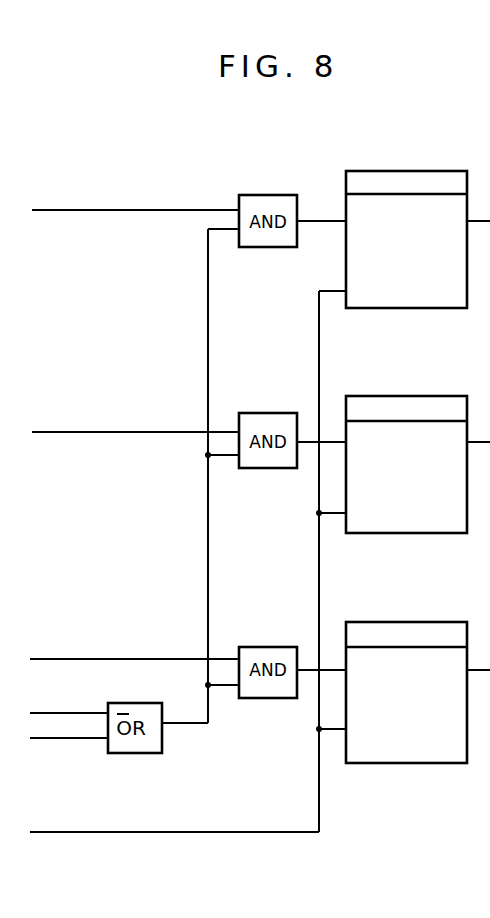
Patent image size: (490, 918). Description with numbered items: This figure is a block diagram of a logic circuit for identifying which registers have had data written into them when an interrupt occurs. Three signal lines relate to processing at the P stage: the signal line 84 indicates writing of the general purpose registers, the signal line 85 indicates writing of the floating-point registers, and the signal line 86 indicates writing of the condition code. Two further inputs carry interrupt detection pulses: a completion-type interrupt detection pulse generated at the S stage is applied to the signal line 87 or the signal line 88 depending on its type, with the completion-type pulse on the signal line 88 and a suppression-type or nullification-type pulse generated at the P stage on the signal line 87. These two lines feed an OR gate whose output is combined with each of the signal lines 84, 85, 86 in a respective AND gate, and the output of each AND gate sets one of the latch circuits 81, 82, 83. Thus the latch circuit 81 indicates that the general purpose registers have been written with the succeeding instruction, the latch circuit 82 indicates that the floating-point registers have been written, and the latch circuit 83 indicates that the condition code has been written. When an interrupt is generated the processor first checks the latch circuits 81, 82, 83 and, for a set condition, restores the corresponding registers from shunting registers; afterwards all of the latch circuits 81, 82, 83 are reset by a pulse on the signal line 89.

The latch circuit 81 is at (412, 171).
The latch circuit 82 is at (373, 396).
The latch circuit 83 is at (376, 604).
The signal line 84 is at (42, 210).
The signal line 85 is at (35, 432).
The signal line 86 is at (35, 659).
The signal line 87 is at (35, 713).
The signal line 88 is at (34, 738).
The signal line 89 is at (34, 832).